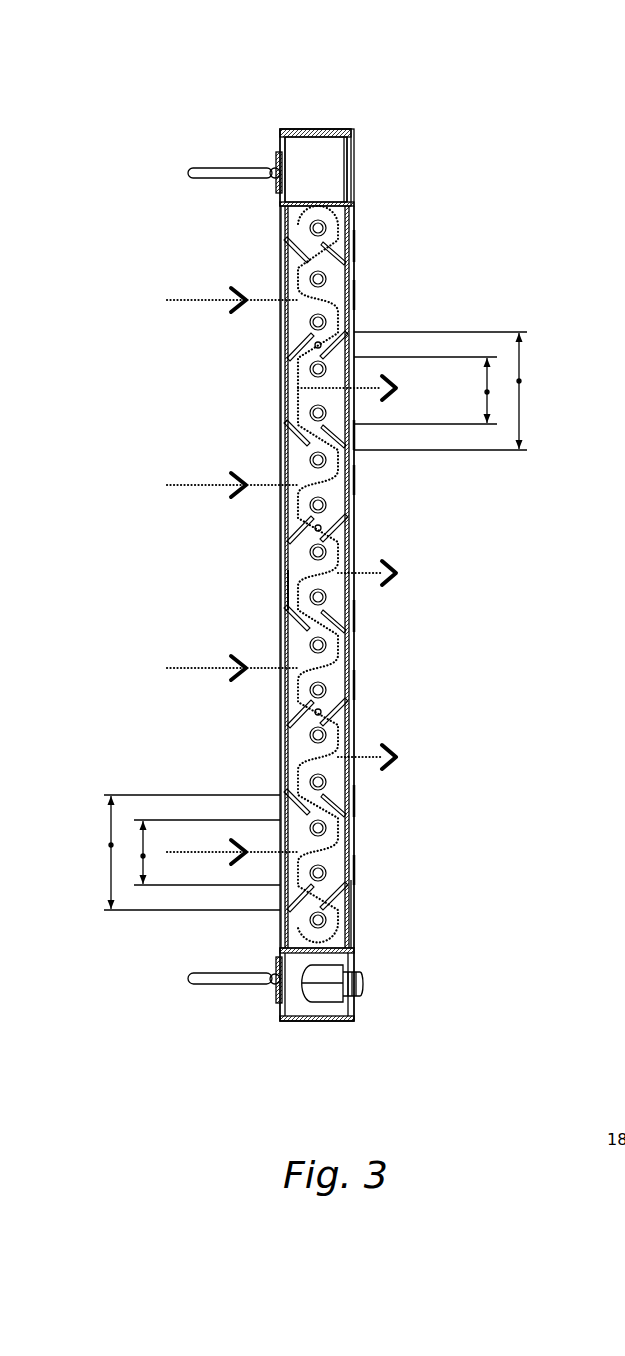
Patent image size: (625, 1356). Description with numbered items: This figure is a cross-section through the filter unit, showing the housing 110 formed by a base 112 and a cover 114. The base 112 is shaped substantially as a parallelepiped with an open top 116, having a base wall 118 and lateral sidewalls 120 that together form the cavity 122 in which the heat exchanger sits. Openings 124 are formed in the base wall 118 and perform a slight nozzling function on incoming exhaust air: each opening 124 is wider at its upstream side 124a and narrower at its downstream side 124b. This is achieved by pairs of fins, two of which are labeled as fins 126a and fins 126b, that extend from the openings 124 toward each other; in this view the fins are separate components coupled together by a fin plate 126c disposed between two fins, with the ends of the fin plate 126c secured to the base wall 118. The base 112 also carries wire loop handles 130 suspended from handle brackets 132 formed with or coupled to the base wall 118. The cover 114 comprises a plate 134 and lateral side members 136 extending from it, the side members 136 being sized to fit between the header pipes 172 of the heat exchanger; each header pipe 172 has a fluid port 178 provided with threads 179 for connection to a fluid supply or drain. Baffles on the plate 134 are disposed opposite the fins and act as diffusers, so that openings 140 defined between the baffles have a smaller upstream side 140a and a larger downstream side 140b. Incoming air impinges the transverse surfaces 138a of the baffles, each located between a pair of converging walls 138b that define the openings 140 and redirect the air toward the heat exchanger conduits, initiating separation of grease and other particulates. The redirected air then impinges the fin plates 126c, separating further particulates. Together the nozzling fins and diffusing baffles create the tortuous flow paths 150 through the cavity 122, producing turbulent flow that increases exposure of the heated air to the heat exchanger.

The housing 110 is at (309, 127).
The base 112 is at (283, 800).
The cover 114 is at (355, 900).
The open top 116 is at (357, 138).
The base wall 118 is at (283, 222).
The lateral sidewalls 120 is at (323, 126).
The cavity 122 is at (303, 168).
The openings 124 is at (299, 313).
The upstream side 124a is at (111, 845).
The downstream side 124b is at (143, 856).
The fins 126a is at (294, 250).
The fins 126b is at (292, 346).
The fin plate 126c is at (283, 588).
The handles 130 is at (190, 171).
The handle brackets 132 is at (275, 157).
The plate 134 is at (356, 918).
The lateral side members 136 is at (330, 203).
The transverse surfaces 138a is at (347, 292).
The converging walls 138b is at (344, 241).
The openings 140 is at (340, 364).
The upstream side 140a is at (487, 392).
The downstream side 140b is at (519, 381).
The tortuous flow paths 150 is at (178, 293).
The header pipes 172 is at (338, 174).
The fluid port 178 is at (327, 998).
The threads 179 is at (358, 1000).